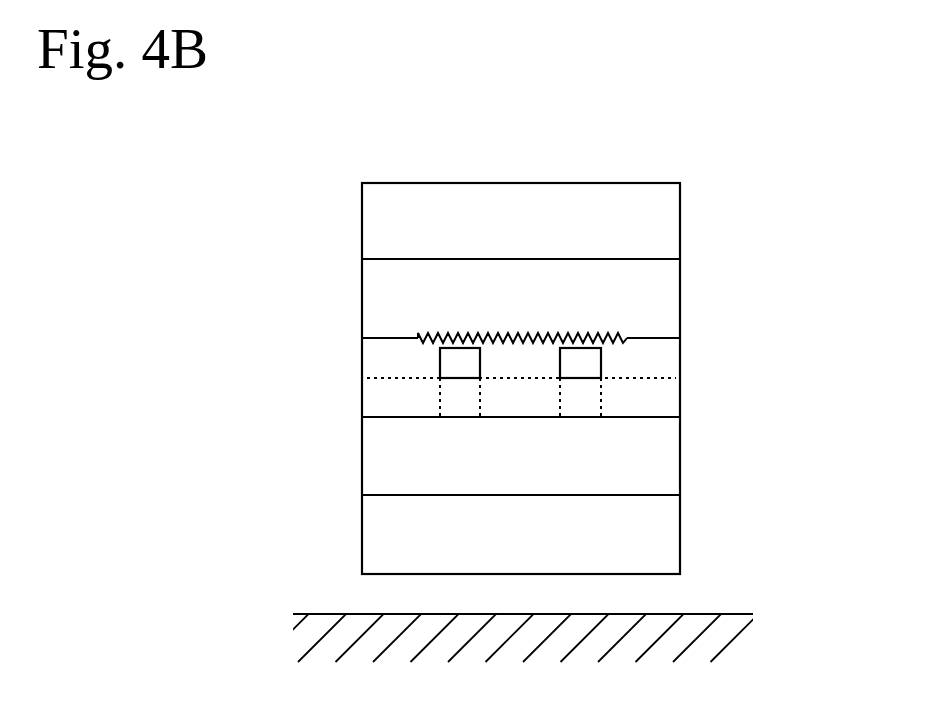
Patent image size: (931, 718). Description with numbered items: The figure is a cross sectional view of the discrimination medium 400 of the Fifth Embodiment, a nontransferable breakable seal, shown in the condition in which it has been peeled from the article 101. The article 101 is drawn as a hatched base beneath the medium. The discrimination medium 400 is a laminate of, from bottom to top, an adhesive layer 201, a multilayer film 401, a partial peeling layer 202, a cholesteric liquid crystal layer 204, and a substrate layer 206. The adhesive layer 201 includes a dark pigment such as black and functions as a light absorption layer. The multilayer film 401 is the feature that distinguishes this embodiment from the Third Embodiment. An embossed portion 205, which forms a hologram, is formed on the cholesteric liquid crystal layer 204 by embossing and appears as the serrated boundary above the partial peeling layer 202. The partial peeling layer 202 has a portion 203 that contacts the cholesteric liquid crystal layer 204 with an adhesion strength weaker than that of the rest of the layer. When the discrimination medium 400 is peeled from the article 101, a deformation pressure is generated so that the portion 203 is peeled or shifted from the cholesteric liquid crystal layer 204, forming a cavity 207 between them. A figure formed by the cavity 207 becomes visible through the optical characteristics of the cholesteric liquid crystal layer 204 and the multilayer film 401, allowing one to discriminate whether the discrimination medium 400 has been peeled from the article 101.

The article 101 is at (323, 613).
The adhesive layer 201 is at (663, 532).
The multilayer film 401 is at (663, 456).
The partial peeling layer 202 is at (688, 340).
The portion 203 is at (469, 357).
The cavity 207 is at (587, 348).
The embossed portion 205 is at (507, 331).
The cholesteric liquid crystal layer 204 is at (665, 289).
The substrate layer 206 is at (658, 224).
The discrimination medium 400 is at (768, 182).